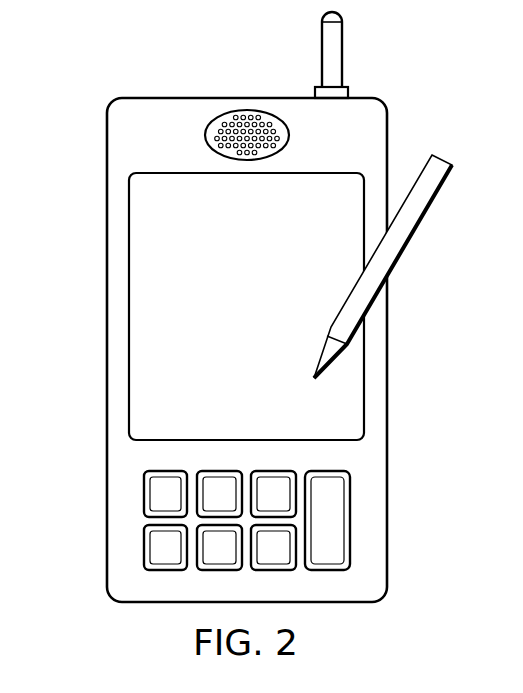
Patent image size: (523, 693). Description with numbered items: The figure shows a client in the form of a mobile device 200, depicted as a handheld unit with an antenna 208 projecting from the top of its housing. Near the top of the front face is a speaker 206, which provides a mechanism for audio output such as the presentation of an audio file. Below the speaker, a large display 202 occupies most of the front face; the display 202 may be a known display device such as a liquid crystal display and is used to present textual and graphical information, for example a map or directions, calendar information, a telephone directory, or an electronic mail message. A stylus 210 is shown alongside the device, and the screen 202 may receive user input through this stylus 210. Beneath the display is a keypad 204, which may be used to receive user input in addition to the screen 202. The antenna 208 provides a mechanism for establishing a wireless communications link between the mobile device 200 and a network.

The mobile device 200 is at (101, 274).
The display 202 is at (267, 323).
The keypad 204 is at (397, 470).
The speaker 206 is at (205, 137).
The antenna 208 is at (342, 55).
The stylus 210 is at (418, 230).